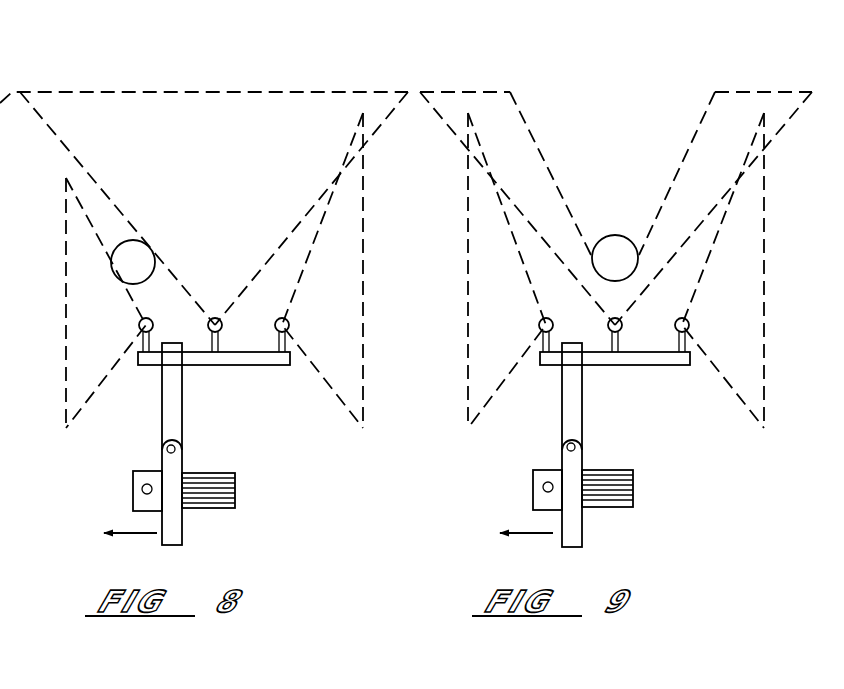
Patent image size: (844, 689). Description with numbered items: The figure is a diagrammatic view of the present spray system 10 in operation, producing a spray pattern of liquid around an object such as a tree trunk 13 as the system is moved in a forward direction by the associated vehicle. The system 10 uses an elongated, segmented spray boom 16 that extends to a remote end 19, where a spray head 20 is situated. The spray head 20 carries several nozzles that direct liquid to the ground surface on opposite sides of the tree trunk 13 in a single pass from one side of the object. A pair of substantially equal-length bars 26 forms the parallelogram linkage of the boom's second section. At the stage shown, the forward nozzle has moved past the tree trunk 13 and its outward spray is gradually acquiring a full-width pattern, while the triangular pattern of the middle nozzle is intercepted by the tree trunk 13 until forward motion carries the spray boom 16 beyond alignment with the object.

In FIG. 8, the system 10 is at (200, 405).
In FIG. 9, the system 10 is at (619, 422).
In FIG. 8, the tree trunk 13 is at (138, 252).
In FIG. 9, the tree trunk 13 is at (622, 250).
In FIG. 8, the spray boom 16 is at (185, 525).
In FIG. 9, the spray boom 16 is at (585, 525).
In FIG. 8, the remote end 19 is at (171, 350).
In FIG. 9, the remote end 19 is at (572, 350).
In FIG. 8, the spray head 20 is at (215, 316).
In FIG. 9, the spray head 20 is at (690, 320).
In FIG. 8, the bars 26 is at (172, 389).
In FIG. 9, the bars 26 is at (572, 389).